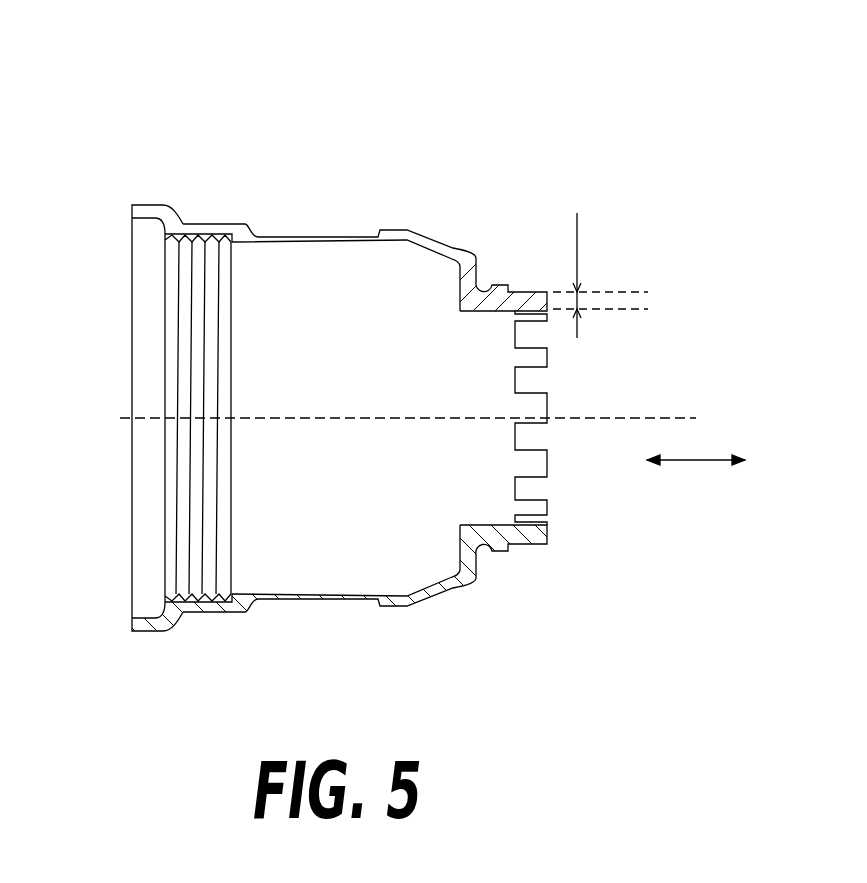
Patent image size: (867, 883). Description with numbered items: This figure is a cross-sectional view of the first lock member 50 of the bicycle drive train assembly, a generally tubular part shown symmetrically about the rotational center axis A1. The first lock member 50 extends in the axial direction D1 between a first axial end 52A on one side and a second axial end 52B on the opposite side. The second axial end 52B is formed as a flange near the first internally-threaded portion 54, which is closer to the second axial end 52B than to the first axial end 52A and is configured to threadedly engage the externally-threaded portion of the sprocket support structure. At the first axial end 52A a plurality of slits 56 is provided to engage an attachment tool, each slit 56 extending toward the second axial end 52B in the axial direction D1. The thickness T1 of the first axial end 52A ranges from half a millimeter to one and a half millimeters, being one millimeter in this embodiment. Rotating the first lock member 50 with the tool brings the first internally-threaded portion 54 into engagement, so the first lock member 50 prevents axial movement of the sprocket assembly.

The first lock member 50 is at (433, 348).
The first axial end 52A is at (539, 296).
The second axial end 52B is at (163, 203).
The first internally-threaded portion 54 is at (155, 328).
The slits 56 is at (551, 378).
The thickness T1 is at (600, 275).
The rotational center axis A1 is at (670, 418).
The axial direction D1 is at (696, 476).